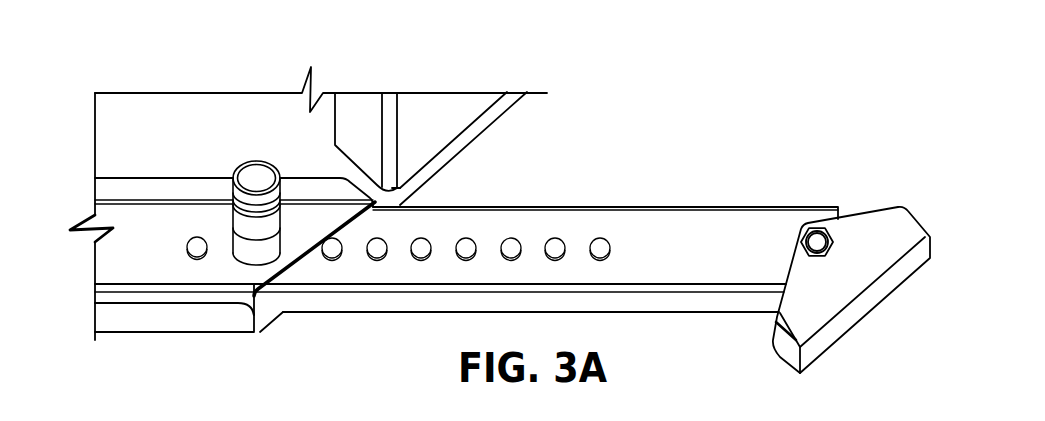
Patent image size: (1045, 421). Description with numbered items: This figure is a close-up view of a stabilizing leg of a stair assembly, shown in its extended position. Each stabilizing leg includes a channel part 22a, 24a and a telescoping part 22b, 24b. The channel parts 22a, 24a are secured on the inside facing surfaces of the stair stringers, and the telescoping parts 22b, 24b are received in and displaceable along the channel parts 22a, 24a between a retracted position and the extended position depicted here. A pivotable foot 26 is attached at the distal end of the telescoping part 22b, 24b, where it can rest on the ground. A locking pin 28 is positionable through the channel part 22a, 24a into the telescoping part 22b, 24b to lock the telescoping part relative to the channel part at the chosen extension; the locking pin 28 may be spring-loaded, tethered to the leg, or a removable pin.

The channel part 22a is at (297, 170).
The channel part 24a is at (132, 225).
The telescoping part 22b is at (512, 199).
The telescoping part 24b is at (742, 238).
The pivotable foot 26 is at (843, 280).
The locking pin 28 is at (258, 180).